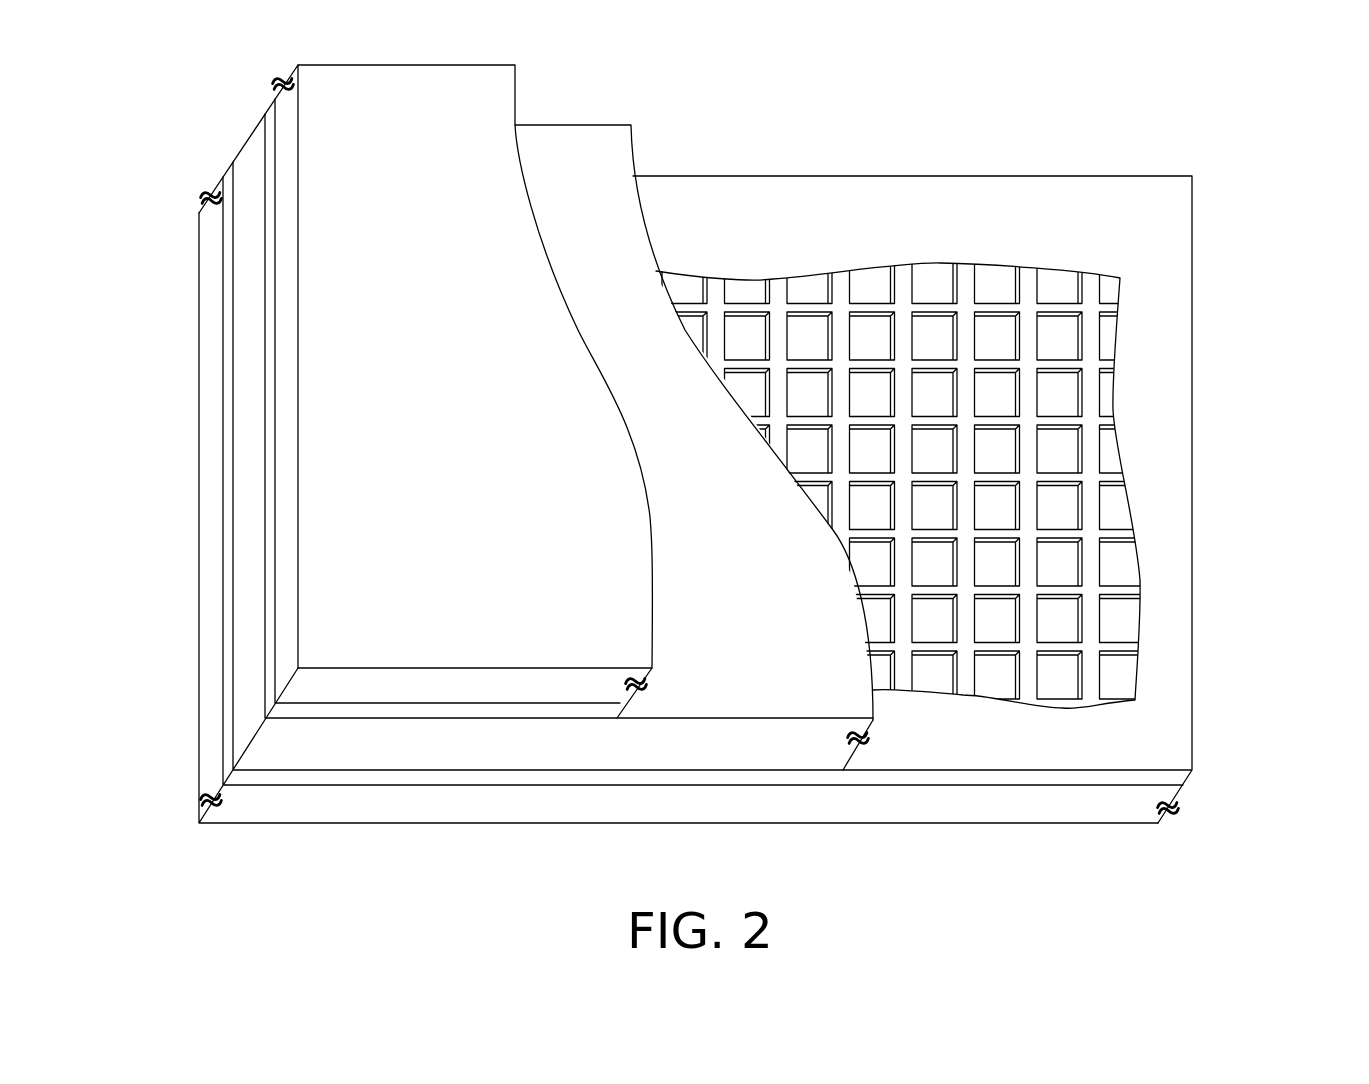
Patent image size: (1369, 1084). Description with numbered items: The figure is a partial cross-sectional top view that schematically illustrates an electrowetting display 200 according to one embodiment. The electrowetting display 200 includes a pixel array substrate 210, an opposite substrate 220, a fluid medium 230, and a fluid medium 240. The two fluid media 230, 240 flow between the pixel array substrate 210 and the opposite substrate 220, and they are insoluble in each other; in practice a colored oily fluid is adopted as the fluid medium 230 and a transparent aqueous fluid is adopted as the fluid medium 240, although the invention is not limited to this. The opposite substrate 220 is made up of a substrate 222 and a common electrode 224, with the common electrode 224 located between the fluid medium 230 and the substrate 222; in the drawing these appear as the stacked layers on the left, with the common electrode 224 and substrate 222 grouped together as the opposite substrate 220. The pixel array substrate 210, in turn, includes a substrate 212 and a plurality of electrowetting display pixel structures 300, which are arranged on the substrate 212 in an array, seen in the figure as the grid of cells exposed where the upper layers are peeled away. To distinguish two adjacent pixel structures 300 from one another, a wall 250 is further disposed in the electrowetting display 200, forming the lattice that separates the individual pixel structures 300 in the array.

The electrowetting display 200 is at (700, 493).
The pixel array substrate 210 is at (783, 501).
The substrate 212 is at (1315, 628).
The opposite substrate 220 is at (452, 434).
The substrate 222 is at (283, 664).
The common electrode 224 is at (270, 639).
The fluid medium 230 is at (463, 392).
The fluid medium 240 is at (233, 514).
The wall 250 is at (984, 482).
The electrowetting display pixel structure 300 is at (1057, 623).